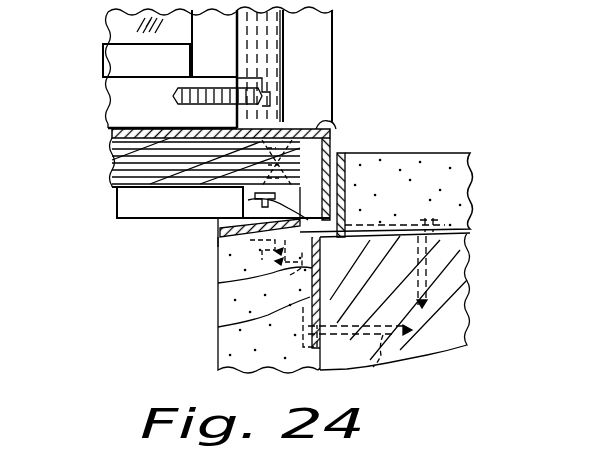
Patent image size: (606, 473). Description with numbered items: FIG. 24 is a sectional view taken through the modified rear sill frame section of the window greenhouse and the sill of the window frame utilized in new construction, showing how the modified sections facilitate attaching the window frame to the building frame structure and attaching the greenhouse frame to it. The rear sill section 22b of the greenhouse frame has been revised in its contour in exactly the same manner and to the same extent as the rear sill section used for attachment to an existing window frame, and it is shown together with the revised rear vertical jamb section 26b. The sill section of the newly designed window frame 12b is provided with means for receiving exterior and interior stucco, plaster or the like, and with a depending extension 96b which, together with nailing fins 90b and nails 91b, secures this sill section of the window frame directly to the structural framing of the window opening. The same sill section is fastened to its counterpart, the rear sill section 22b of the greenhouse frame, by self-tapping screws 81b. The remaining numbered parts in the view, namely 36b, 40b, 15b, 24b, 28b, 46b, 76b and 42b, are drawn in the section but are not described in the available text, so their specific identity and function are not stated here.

The door frame member 36b is at (110, 18).
The insulating panel 40b is at (184, 65).
The rear vertical jamb section 26b is at (266, 58).
The mounting bracket 15b is at (270, 82).
The rear sill section 22b is at (313, 122).
The frame sill 24b is at (110, 108).
The laminated threshold 28b is at (118, 163).
The trim strip 46b is at (112, 205).
The channel member 76b is at (243, 212).
The wall 42b is at (340, 198).
The window frame 12b is at (218, 237).
The self-tapping screws 81b is at (218, 283).
The depending extension 96b is at (218, 327).
The nailing fins 90b is at (355, 258).
The nails 91b is at (376, 356).